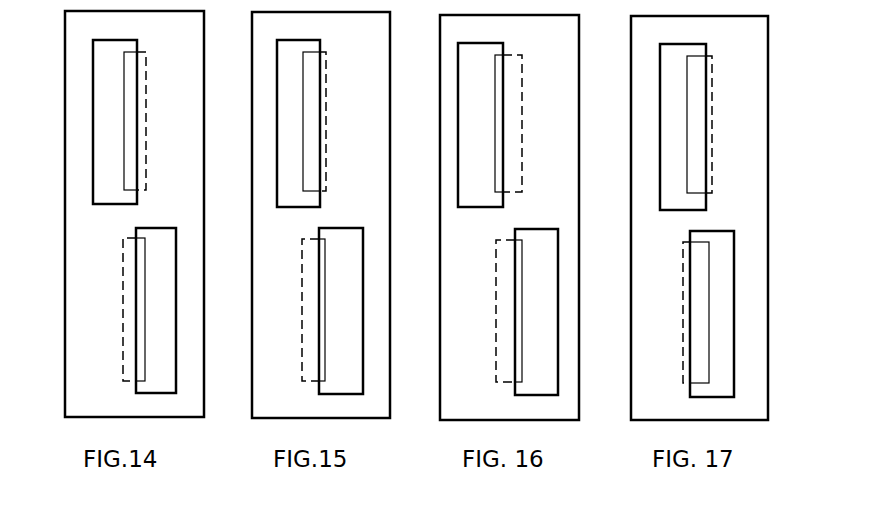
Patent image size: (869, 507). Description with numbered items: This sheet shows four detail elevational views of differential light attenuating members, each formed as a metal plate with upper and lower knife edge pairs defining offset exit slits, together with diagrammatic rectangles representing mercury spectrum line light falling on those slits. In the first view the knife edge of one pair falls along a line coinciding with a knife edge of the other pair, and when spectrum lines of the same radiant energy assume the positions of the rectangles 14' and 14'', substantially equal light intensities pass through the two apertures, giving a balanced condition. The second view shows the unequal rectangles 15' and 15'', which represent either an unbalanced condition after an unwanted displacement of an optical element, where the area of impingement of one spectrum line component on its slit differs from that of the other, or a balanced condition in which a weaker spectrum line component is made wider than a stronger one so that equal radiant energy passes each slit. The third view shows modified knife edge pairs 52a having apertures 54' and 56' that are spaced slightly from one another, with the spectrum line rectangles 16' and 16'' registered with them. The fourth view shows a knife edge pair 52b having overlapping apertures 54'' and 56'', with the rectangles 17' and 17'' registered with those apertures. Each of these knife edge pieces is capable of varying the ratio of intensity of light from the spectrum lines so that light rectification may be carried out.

In FIG. 14, the spectrum line rectangle 14' is at (76, 122).
In FIG. 14, the spectrum line rectangle 14'' is at (182, 310).
In FIG. 15, the unequal spectrum line rectangle 15' is at (272, 123).
In FIG. 15, the unequal spectrum line rectangle 15'' is at (369, 311).
In FIG. 16, the spectrum line rectangle 16' is at (464, 123).
In FIG. 16, the spectrum line rectangle 16'' is at (559, 311).
In FIG. 17, the spectrum line rectangle 17' is at (654, 124).
In FIG. 17, the spectrum line rectangle 17'' is at (744, 312).
In FIG. 16, the knife edge pairs 52a is at (556, 70).
In FIG. 17, the knife edge pair 52b is at (749, 125).
In FIG. 16, the aperture 54' is at (513, 125).
In FIG. 17, the aperture 54'' is at (714, 127).
In FIG. 16, the aperture 56' is at (544, 297).
In FIG. 17, the aperture 56'' is at (726, 298).